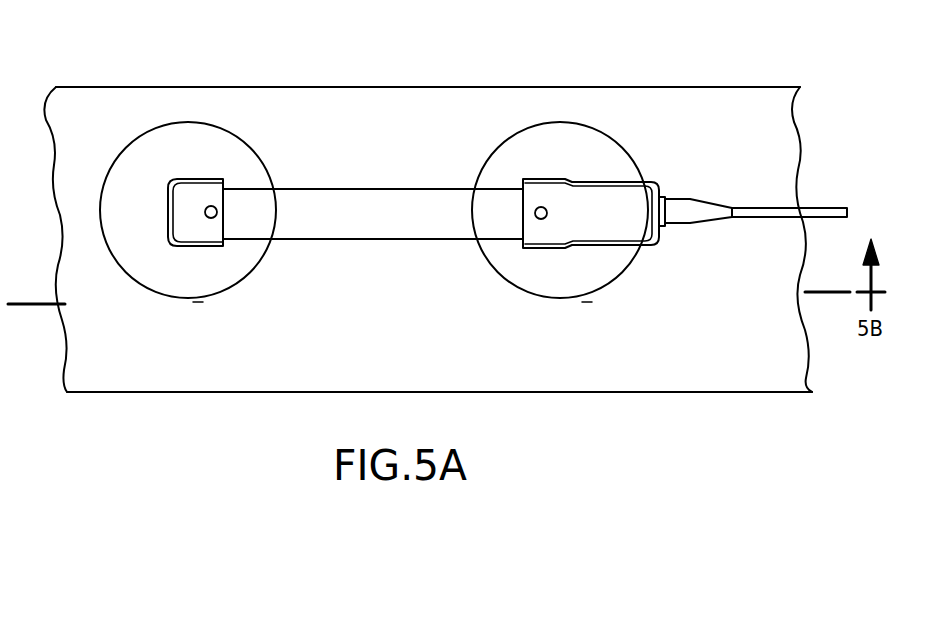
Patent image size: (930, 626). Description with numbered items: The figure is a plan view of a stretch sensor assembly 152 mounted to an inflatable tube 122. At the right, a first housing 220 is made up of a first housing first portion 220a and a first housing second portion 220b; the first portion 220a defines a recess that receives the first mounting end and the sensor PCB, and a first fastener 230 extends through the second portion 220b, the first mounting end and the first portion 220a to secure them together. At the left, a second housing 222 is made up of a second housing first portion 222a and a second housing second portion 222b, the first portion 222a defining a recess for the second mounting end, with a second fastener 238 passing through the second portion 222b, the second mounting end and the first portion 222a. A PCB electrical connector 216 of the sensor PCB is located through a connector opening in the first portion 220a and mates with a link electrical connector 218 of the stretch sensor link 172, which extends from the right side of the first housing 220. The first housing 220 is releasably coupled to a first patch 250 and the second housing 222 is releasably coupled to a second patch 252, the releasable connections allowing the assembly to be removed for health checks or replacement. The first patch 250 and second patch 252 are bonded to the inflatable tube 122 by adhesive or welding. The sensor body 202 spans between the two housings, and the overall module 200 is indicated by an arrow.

The inflatable tube 122 is at (310, 113).
The stretch sensor assembly 152 is at (668, 164).
The stretch sensor link 172 is at (777, 210).
The transmitter module 200 is at (384, 231).
The body 202 is at (379, 223).
The PCB electrical connector 216 is at (664, 232).
The link electrical connector 218 is at (700, 226).
The first housing 220 is at (591, 274).
The first housing first portion 220a is at (557, 248).
The first housing second portion 220b is at (532, 318).
The second housing 222 is at (198, 272).
The second housing first portion 222a is at (172, 243).
The second housing second portion 222b is at (211, 249).
The first fastener 230 is at (535, 217).
The second fastener 238 is at (206, 208).
The first patch 250 is at (572, 140).
The second patch 252 is at (196, 145).